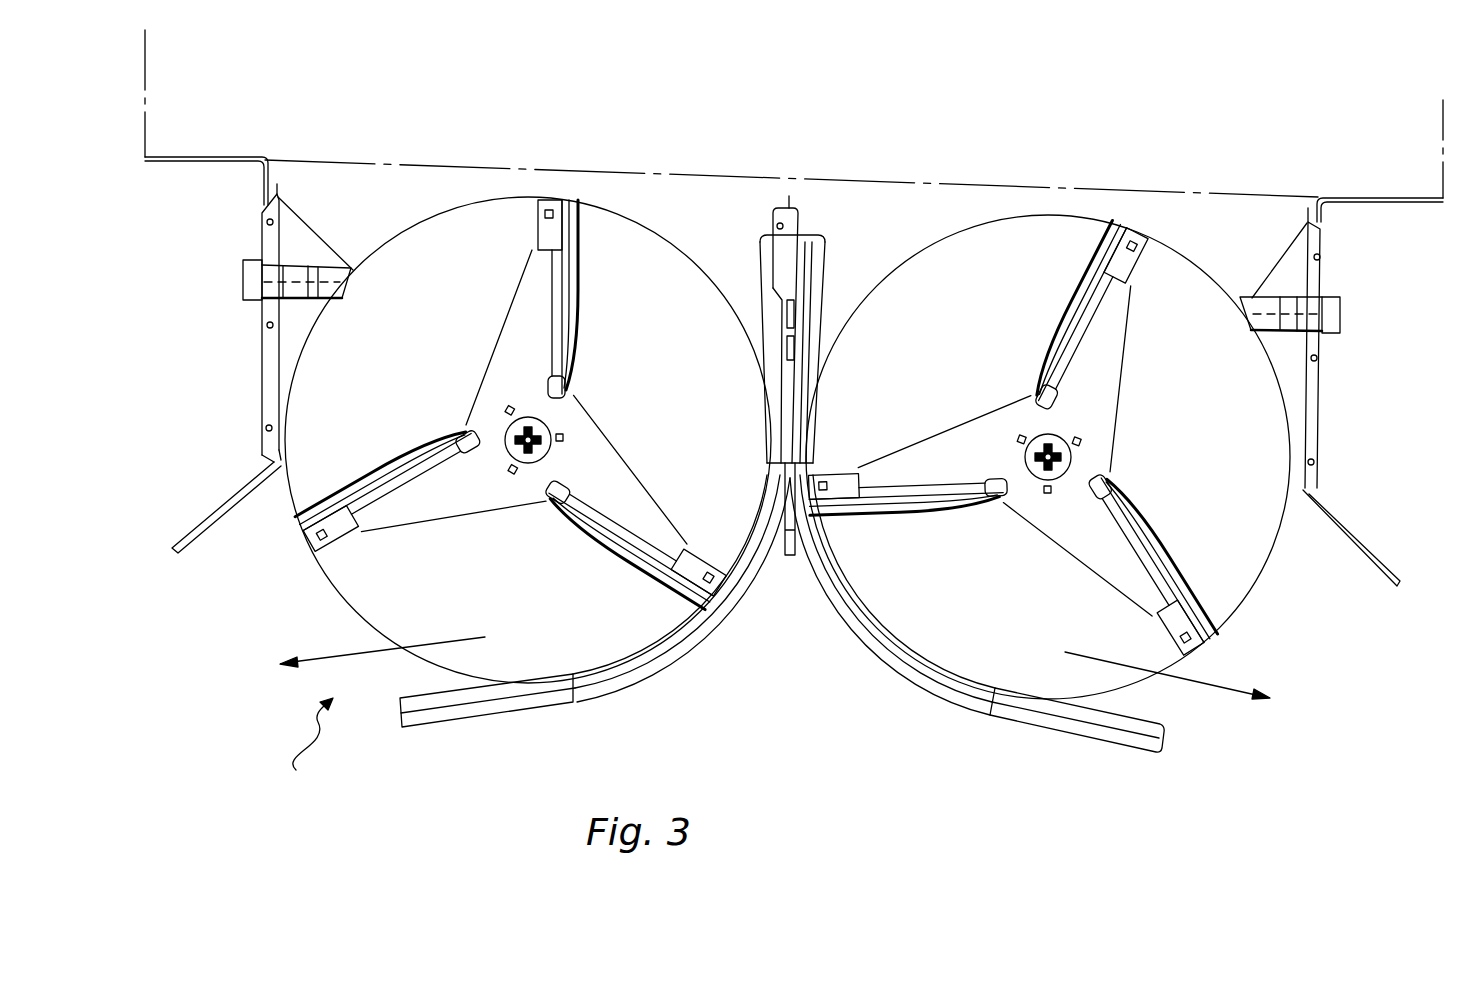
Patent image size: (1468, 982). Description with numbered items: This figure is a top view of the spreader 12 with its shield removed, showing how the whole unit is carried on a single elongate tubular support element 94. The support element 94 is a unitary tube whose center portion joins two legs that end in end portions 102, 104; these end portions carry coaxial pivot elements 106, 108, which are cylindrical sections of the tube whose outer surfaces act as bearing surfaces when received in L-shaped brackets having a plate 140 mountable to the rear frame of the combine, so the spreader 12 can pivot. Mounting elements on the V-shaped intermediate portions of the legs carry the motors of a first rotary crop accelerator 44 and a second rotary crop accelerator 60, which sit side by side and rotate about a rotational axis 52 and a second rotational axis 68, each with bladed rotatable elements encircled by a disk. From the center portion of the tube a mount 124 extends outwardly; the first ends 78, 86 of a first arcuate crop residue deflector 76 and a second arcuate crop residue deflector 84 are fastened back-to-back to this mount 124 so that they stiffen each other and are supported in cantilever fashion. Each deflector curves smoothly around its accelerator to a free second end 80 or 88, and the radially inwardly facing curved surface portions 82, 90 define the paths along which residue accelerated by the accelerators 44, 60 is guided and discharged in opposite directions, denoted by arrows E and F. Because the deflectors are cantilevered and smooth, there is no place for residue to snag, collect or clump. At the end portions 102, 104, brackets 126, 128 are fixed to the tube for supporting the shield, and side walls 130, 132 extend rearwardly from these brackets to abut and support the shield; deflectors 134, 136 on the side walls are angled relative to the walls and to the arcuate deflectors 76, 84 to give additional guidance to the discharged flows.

The spreader 12 is at (299, 751).
The first rotary crop accelerator 44 is at (528, 363).
The rotational axis 52 is at (540, 435).
The second rotary crop accelerator 60 is at (1048, 420).
The second rotational axis 68 is at (1060, 455).
The first arcuate crop residue deflector 76 is at (692, 670).
The first end 78 is at (760, 258).
The second end 80 is at (512, 712).
The curved surface portion 82 is at (770, 505).
The second arcuate crop residue deflector 84 is at (900, 690).
The first end 86 is at (826, 262).
The second end 88 is at (1130, 750).
The curved surface portion 90 is at (845, 478).
The elongate tubular support element 94 is at (251, 295).
The end portion 102 is at (243, 268).
The end portion 104 is at (1340, 312).
The pivot element 106 is at (252, 298).
The pivot element 108 is at (1322, 333).
The mount 124 is at (792, 200).
The bracket 126 is at (305, 235).
The bracket 128 is at (1280, 255).
The side wall 130 is at (262, 427).
The side wall 132 is at (1320, 470).
The deflector 134 is at (205, 528).
The deflector 136 is at (1385, 575).
The plate 140 is at (243, 157).
The discharge flow path arrow E is at (440, 636).
The discharge flow path arrow F is at (1218, 690).